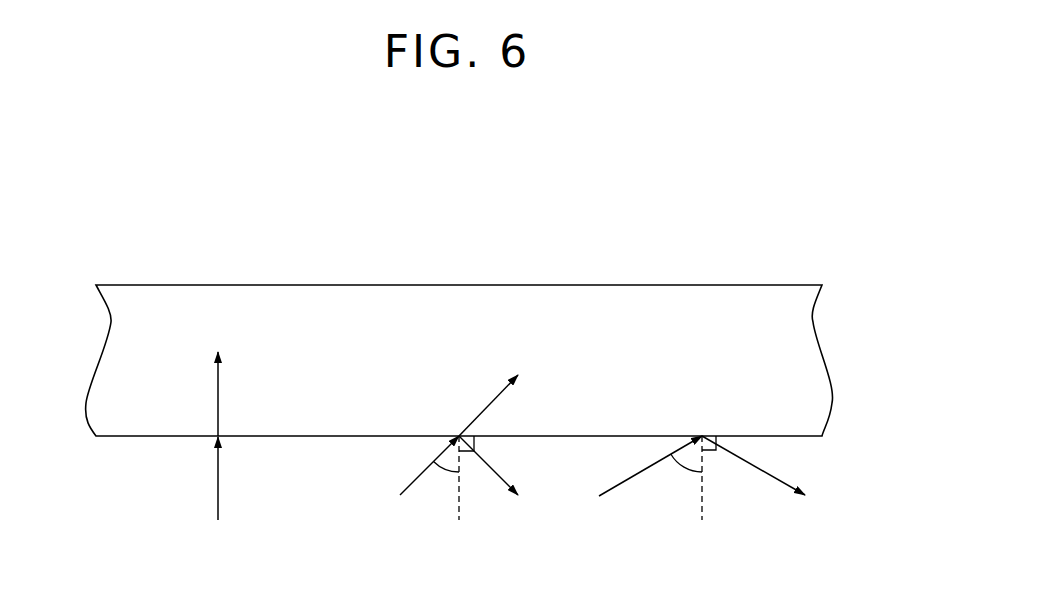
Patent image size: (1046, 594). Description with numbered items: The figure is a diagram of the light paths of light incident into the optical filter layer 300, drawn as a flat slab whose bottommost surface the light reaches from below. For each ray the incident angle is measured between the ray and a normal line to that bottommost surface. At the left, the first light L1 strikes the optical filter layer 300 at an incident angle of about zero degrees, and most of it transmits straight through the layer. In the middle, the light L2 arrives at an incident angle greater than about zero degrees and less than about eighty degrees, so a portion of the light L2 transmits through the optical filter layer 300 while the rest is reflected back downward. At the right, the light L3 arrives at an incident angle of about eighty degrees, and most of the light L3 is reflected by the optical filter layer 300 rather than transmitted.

The optical filter layer 300 is at (808, 359).
The first light L1 is at (248, 452).
The light L2 is at (442, 447).
The light L3 is at (685, 495).